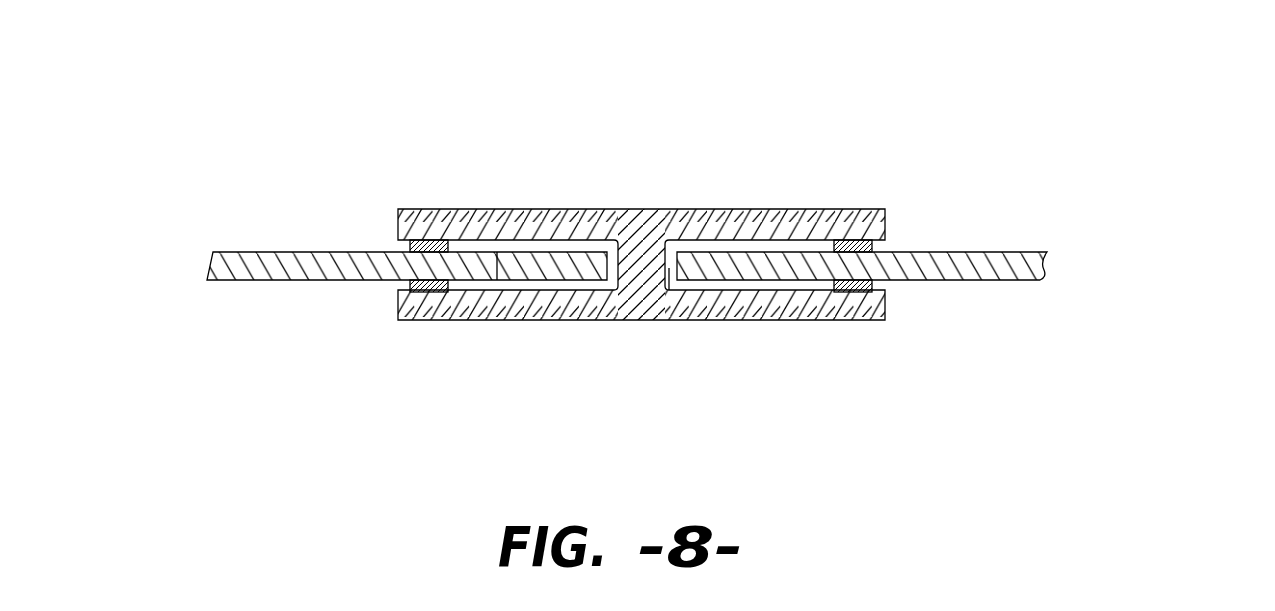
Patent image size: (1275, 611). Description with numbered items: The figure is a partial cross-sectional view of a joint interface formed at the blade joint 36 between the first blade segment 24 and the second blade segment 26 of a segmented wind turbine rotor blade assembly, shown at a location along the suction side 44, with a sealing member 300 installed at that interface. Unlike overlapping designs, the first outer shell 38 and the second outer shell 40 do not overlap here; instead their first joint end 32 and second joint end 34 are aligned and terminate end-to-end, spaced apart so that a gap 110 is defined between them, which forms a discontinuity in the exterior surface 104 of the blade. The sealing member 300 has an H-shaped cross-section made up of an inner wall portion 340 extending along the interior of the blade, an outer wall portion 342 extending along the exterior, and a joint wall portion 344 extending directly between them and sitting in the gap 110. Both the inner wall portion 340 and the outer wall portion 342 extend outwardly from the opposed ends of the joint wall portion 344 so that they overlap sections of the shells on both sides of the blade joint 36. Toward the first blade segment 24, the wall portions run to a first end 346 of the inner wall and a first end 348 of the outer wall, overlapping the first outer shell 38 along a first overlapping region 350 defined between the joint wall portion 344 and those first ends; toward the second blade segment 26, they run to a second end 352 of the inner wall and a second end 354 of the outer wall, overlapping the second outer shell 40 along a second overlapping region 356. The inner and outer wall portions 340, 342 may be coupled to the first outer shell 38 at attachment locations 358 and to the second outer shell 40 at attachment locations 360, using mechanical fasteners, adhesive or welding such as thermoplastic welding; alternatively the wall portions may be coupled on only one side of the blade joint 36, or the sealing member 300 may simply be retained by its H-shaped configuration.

The first blade segment 24 is at (302, 152).
The second blade segment 26 is at (978, 152).
The first joint end 32 is at (596, 215).
The second joint end 34 is at (686, 215).
The blade joint 36 is at (650, 108).
The first outer shell 38 is at (205, 254).
The second outer shell 40 is at (1052, 253).
The suction side 44 is at (290, 250).
The exterior surface 104 is at (980, 250).
The gap 110 is at (668, 290).
The sealing member 300 is at (545, 183).
The inner wall portion 340 is at (678, 318).
The outer wall portion 342 is at (745, 215).
The joint wall portion 344 is at (642, 275).
The first end of inner wall portion 346 is at (398, 312).
The first end of outer wall portion 348 is at (398, 215).
The first overlapping region 350 is at (618, 408).
The second end of inner wall portion 352 is at (885, 312).
The second end of outer wall portion 354 is at (885, 215).
The second overlapping region 356 is at (885, 408).
The attachment locations 358 is at (415, 243).
The attachment locations 360 is at (875, 243).